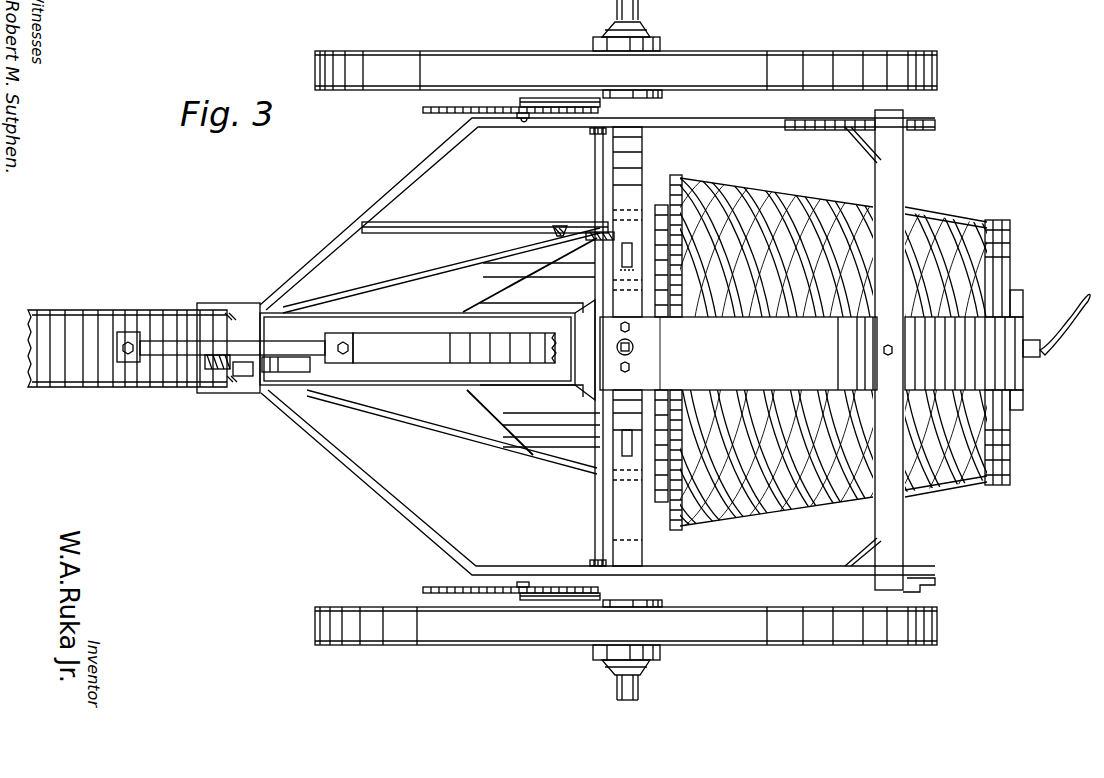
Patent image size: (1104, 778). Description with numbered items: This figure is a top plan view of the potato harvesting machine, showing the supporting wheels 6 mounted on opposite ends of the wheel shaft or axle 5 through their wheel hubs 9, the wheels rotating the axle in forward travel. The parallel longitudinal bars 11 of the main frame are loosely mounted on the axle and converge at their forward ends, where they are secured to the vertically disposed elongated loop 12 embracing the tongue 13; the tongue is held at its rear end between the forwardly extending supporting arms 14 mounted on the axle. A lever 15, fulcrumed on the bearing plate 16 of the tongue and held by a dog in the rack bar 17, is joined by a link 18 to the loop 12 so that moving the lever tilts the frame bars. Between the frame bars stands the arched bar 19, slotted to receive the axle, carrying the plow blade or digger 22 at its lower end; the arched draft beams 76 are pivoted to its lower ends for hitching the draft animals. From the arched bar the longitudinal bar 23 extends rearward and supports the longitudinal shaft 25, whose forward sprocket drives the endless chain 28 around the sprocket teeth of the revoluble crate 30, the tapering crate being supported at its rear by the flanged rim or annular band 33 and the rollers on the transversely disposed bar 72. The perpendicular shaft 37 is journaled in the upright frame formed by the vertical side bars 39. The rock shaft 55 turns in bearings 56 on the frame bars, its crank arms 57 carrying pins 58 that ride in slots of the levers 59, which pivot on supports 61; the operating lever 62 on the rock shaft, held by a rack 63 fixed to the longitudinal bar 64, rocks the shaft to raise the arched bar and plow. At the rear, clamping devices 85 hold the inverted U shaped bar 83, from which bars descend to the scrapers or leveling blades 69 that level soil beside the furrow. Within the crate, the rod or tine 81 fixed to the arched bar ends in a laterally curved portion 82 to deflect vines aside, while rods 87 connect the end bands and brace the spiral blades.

The wheel shaft or axle 5 is at (615, 695).
The supporting wheels 6 is at (393, 91).
The wheel hubs 9 is at (660, 48).
The longitudinal bars of the main frame 11 is at (757, 128).
The vertically disposed elongated loop 12 is at (242, 394).
The tongue 13 is at (88, 388).
The forwardly extending supporting arms 14 is at (583, 400).
The lever 15 is at (215, 378).
The bearing plate 16 is at (310, 345).
The rack bar 17 is at (175, 343).
The link 18 is at (280, 388).
The arched bar 19 is at (637, 188).
The plow blade or digger 22 is at (498, 284).
The longitudinal bar 23 is at (738, 353).
The longitudinal shaft 25 is at (1040, 352).
The endless chain 28 is at (660, 300).
The revoluble crate 30 is at (1012, 460).
The flanged rim or annular band 33 is at (1010, 245).
The perpendicular shaft 37 is at (634, 350).
The vertical side bars 39 is at (613, 232).
The rock shaft 55 is at (596, 176).
The bearings 56 is at (592, 132).
The crank arms 57 is at (537, 102).
The pins 58 is at (522, 120).
The levers 59 is at (428, 114).
The supports 61 is at (908, 138).
The operating lever 62 is at (590, 237).
The rack 63 is at (556, 228).
The longitudinal bar 64 is at (418, 233).
The scrapers or leveling blades 69 is at (915, 212).
The transversely disposed bar 72 is at (1028, 400).
The arched draft beams 76 is at (432, 280).
The rod or tine 81 is at (773, 500).
The laterally curved end 82 is at (1070, 310).
The inverted U shaped bar 83 is at (880, 328).
The clamping devices 85 is at (935, 589).
The rods 87 is at (960, 214).